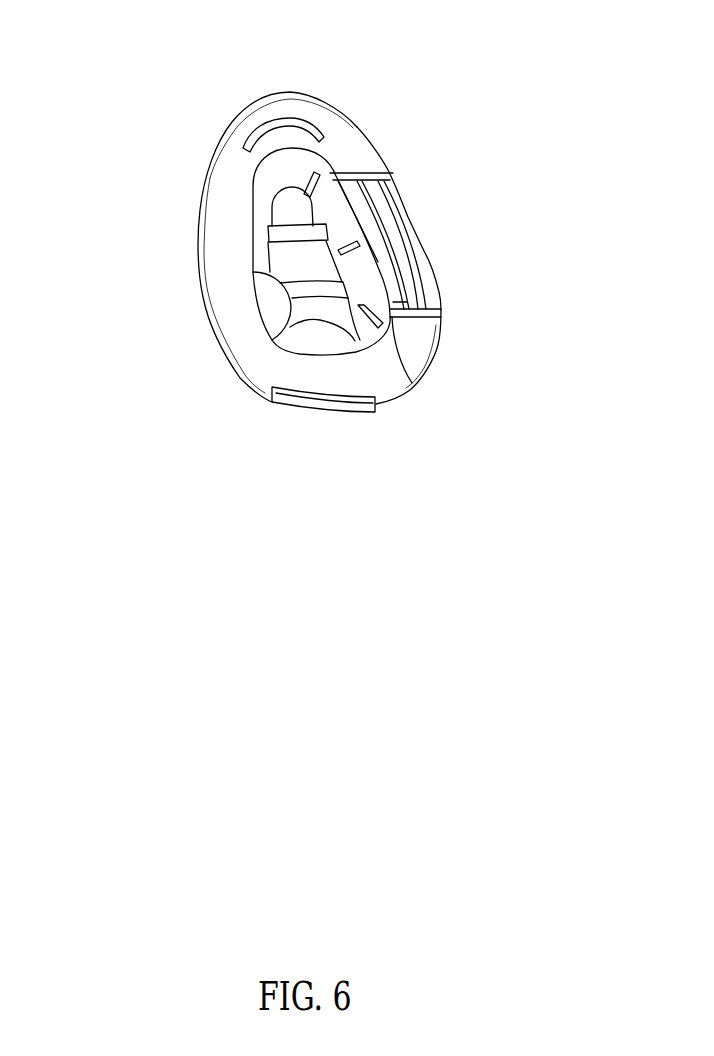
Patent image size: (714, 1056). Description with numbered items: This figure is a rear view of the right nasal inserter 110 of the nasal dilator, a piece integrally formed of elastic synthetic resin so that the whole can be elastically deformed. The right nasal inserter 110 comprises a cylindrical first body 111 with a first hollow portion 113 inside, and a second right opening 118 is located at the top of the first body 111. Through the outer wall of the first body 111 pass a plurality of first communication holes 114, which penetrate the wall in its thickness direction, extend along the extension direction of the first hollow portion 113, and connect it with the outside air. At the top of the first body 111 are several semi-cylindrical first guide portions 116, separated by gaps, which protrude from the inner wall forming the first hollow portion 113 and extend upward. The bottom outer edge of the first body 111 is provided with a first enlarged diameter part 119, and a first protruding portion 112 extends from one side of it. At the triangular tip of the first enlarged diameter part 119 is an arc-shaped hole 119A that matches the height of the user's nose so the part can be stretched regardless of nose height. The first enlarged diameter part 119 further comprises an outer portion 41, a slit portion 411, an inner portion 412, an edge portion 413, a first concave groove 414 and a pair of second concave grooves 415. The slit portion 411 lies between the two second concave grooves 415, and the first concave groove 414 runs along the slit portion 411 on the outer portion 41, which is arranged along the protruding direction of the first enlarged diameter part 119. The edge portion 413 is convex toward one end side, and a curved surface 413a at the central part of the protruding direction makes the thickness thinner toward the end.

The right nasal inserter 110 is at (187, 97).
The first body 111 is at (232, 339).
The first protruding portion 112 is at (341, 412).
The first hollow portion 113 is at (372, 300).
The first communication holes 114 is at (291, 123).
The first guide portions 116 is at (292, 228).
The second right opening 118 is at (272, 262).
The first enlarged diameter part 119 is at (232, 160).
The arc-shaped hole 119A is at (263, 126).
The outer portion 41 is at (484, 250).
The slit portion 411 is at (397, 204).
The inner portion 412 is at (372, 320).
The edge portion 413 is at (433, 297).
The curved surface 413a is at (408, 219).
The first concave groove 414 is at (365, 180).
The second concave grooves 415 is at (347, 173).